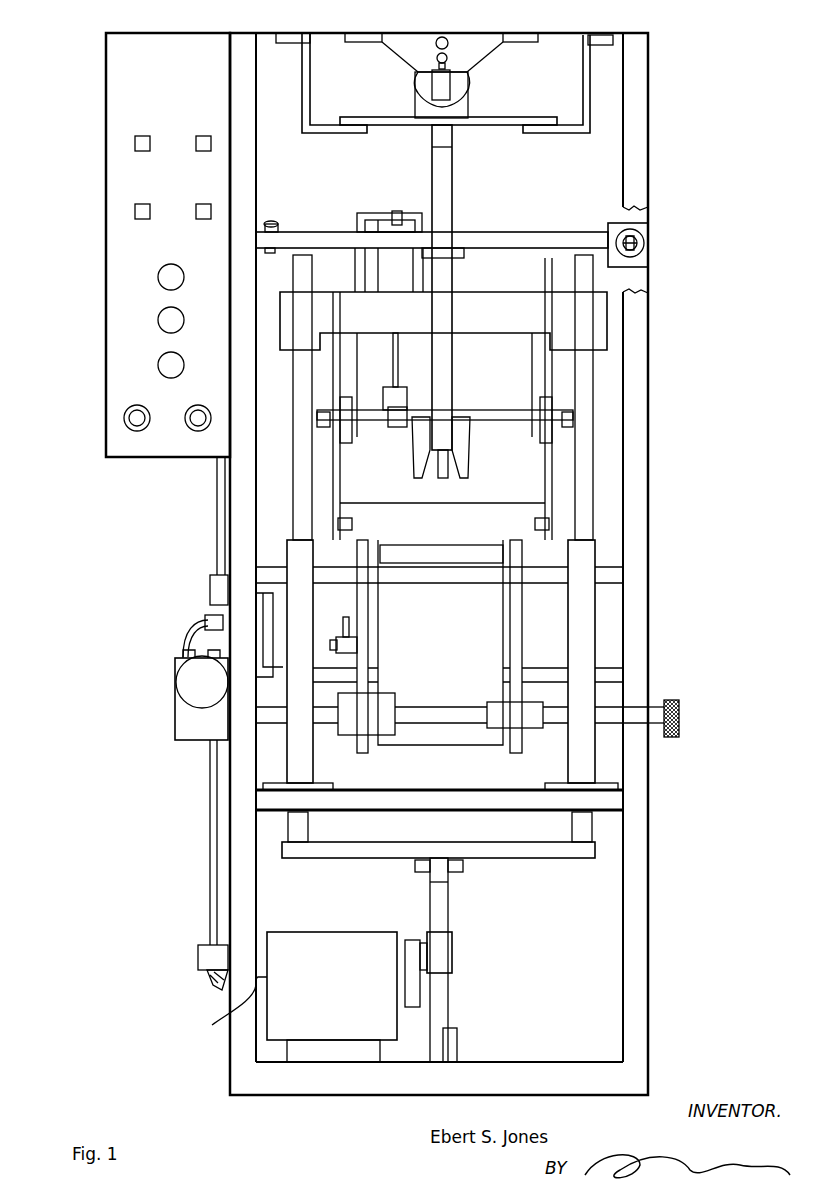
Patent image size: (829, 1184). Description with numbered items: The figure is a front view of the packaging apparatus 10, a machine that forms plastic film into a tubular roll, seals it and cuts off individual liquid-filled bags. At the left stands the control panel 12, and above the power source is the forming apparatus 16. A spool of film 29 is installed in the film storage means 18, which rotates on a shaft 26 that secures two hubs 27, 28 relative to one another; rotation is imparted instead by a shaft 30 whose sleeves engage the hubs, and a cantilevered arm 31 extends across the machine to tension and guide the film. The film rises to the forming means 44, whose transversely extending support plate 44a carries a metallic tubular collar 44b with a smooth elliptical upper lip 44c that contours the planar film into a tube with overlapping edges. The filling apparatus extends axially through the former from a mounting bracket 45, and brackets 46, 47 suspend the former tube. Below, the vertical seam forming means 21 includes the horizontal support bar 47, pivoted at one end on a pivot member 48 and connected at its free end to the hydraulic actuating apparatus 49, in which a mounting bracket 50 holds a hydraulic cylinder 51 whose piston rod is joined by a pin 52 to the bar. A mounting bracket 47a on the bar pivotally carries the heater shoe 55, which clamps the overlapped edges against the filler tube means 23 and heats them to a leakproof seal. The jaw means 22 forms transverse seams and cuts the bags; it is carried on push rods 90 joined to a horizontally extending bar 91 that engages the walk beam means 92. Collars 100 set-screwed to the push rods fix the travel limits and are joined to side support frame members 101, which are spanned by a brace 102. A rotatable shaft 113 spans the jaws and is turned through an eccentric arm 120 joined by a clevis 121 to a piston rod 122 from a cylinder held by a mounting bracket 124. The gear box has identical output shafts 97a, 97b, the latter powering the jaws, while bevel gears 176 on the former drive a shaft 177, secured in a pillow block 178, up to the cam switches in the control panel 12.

The packaging apparatus 10 is at (91, 862).
The control panel 12 is at (89, 422).
The forming apparatus 16 is at (131, 712).
The film storage means 18 is at (664, 609).
The vertical seam forming means 21 is at (478, 215).
The jaw means 22 is at (677, 373).
The filler tube means 23 is at (470, 461).
The shaft 26 is at (340, 637).
The hub 27 is at (505, 630).
The hub 28 is at (357, 556).
The film 29 is at (440, 642).
The shaft 30 is at (605, 713).
The cantilevered arm 31 is at (605, 670).
The forming means 44 is at (470, 128).
The support plate 44a is at (518, 122).
The tubular collar 44b is at (415, 93).
The upper lip 44c is at (468, 84).
The mounting bracket 45 is at (390, 50).
The bracket 46 is at (302, 101).
The horizontal support bar 47 is at (590, 98).
The mounting bracket 47a is at (463, 251).
The pivot member 48 is at (270, 222).
The hydraulic actuating apparatus 49 is at (724, 243).
The mounting bracket 50 is at (625, 222).
The hydraulic cylinder 51 is at (650, 257).
The pin 52 is at (648, 240).
The heater shoe 55 is at (432, 172).
The push rod 90 is at (583, 488).
The horizontally extending bar 91 is at (487, 850).
The walk beam means 92 is at (470, 952).
The output shaft 97a is at (256, 993).
The output shaft 97b is at (397, 973).
The collar 100 is at (600, 308).
The side support frame member 101 is at (545, 290).
The brace 102 is at (338, 493).
The rotatable shaft 113 is at (470, 413).
The eccentric arm 120 is at (393, 430).
The clevis 121 is at (400, 390).
The piston rod 122 is at (398, 340).
The mounting bracket 124 is at (372, 213).
The bevel gears 176 is at (207, 978).
The shaft 177 is at (210, 900).
The pillow block 178 is at (198, 952).